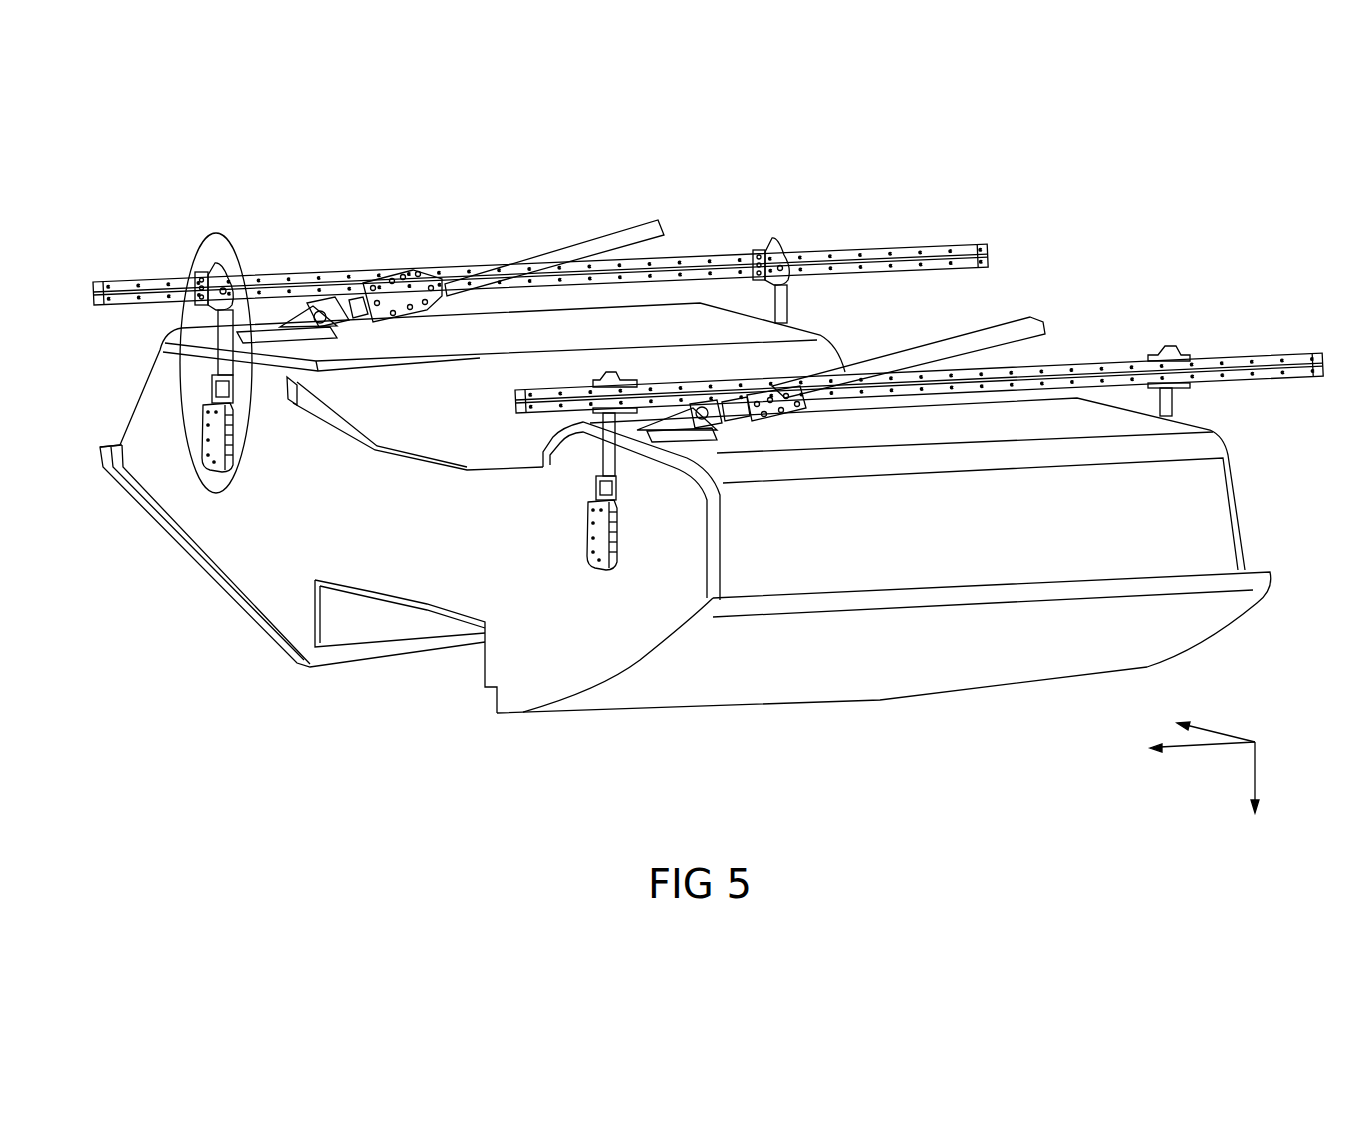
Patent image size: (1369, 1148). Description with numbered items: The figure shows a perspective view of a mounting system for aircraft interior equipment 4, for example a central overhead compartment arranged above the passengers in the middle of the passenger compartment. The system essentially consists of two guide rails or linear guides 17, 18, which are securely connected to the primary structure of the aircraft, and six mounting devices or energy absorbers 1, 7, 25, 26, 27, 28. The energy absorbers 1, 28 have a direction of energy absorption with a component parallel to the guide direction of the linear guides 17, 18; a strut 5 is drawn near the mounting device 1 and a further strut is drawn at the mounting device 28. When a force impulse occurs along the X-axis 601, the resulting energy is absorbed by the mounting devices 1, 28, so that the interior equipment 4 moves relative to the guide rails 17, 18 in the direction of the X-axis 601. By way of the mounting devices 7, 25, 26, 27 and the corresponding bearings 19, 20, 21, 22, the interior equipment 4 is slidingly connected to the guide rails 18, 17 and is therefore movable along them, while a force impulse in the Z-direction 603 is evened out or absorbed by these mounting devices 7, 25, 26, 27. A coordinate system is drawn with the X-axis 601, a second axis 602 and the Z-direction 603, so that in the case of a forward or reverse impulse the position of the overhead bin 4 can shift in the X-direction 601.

The mounting device 1 is at (395, 292).
The interior equipment 4 is at (685, 508).
The strut 5 is at (607, 240).
The mounting device 7 is at (225, 350).
The guide rail 17 is at (1291, 358).
The guide rail 18 is at (905, 250).
The bearing 19 is at (1172, 350).
The bearing 20 is at (776, 240).
The bearing 21 is at (228, 262).
The bearing 22 is at (613, 375).
The mounting device 25 is at (590, 486).
The mounting device 26 is at (1188, 402).
The mounting device 27 is at (806, 296).
The mounting device 28 is at (1025, 307).
The X-axis 601 is at (1200, 748).
The y axis 602 is at (1225, 733).
The Z-direction 603 is at (1258, 768).